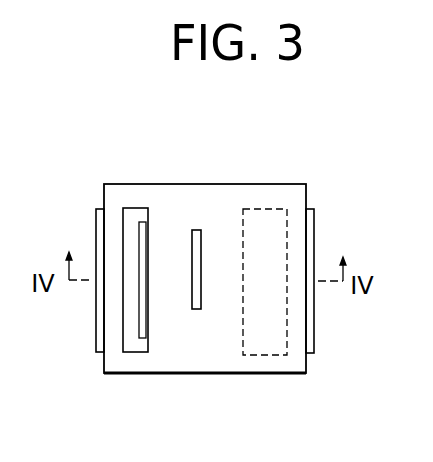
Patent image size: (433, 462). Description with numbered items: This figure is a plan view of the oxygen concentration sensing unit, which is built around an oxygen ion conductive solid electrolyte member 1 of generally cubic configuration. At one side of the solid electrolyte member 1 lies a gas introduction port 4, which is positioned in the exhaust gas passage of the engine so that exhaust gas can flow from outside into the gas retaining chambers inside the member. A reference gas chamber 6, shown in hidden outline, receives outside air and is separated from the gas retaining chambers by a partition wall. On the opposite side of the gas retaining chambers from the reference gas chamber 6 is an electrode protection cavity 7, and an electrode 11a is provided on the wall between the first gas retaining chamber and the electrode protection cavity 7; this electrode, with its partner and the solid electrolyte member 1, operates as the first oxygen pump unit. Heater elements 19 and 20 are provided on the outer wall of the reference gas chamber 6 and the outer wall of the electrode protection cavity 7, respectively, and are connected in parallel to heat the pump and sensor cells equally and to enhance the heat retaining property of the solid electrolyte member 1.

The oxygen ion conductive solid electrolyte member 1 is at (292, 184).
The heater element 19 is at (96, 315).
The heater element 20 is at (314, 325).
The electrode protection cavity 7 is at (137, 345).
The electrode 11a is at (139, 232).
The gas introduction port 4 is at (195, 309).
The reference gas chamber 6 is at (268, 355).